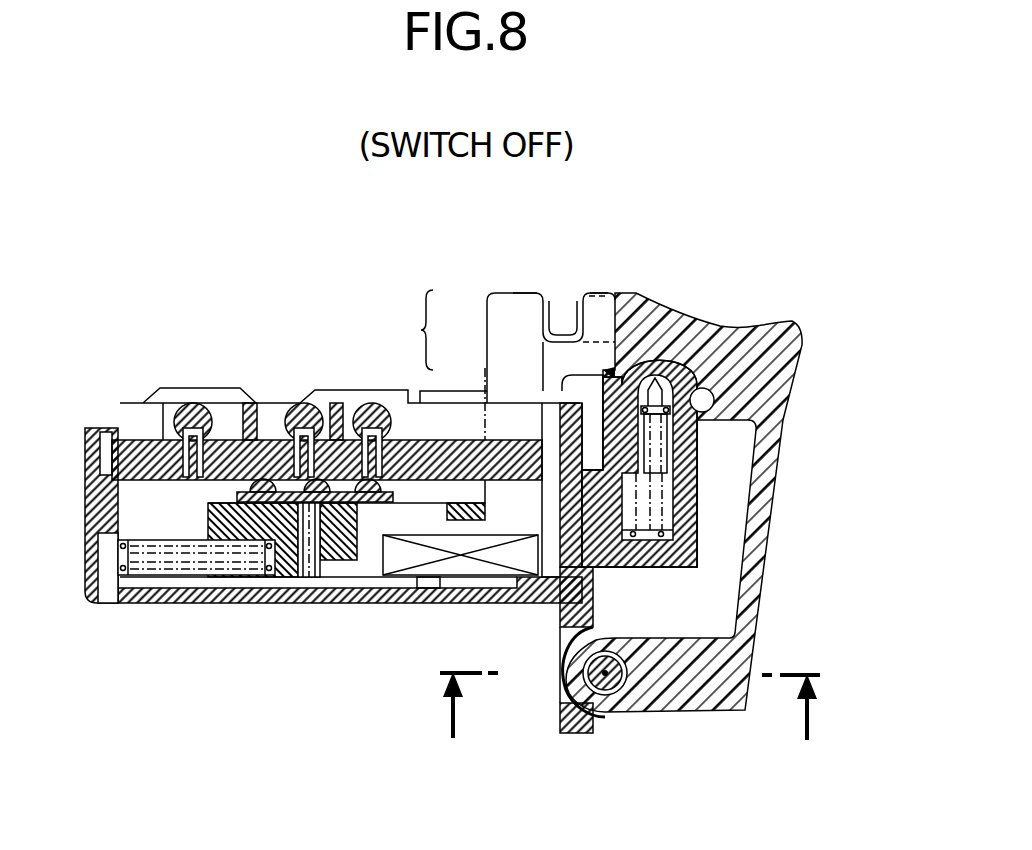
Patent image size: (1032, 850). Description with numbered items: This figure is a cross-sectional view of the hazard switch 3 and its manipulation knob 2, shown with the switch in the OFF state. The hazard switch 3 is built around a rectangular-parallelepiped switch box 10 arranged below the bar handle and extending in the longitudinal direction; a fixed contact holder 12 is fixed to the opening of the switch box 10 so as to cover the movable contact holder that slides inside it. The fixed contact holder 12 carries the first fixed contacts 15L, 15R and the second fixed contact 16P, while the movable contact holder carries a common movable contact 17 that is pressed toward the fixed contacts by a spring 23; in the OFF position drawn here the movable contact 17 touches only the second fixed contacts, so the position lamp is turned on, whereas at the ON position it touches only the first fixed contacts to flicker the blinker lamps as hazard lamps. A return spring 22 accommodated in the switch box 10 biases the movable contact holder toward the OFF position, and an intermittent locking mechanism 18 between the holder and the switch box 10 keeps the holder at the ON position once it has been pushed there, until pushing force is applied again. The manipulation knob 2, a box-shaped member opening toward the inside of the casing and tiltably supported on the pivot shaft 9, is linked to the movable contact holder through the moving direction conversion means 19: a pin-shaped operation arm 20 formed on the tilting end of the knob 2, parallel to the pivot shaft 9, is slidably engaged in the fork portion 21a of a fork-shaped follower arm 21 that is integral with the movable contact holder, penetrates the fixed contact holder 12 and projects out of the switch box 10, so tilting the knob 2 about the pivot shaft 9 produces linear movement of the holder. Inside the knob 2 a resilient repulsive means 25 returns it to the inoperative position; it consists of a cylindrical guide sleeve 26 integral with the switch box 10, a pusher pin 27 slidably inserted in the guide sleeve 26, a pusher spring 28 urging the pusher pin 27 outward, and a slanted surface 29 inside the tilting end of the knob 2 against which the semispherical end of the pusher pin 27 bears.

The manipulation knob 2 is at (790, 396).
The hazard switch 3 is at (178, 380).
The pivot shaft 9 is at (628, 760).
The switch box 10 is at (227, 604).
The fixed contact holder 12 is at (143, 440).
The first fixed contact 15L is at (193, 430).
The first fixed contact 15R is at (284, 432).
The second fixed contact 16P is at (352, 420).
The movable contact 17 is at (240, 492).
The intermittent locking mechanism 18 is at (463, 578).
The moving direction conversion means 19 is at (500, 380).
The operation arm 20 is at (574, 305).
The follower arm 21 is at (507, 356).
The fork portion 21a is at (597, 300).
The return spring 22 is at (148, 600).
The spring 23 is at (313, 578).
The resilient repulsive means 25 is at (699, 432).
The guide sleeve 26 is at (700, 498).
The pusher pin 27 is at (650, 356).
The pusher spring 28 is at (660, 546).
The slanted surface 29 is at (707, 378).